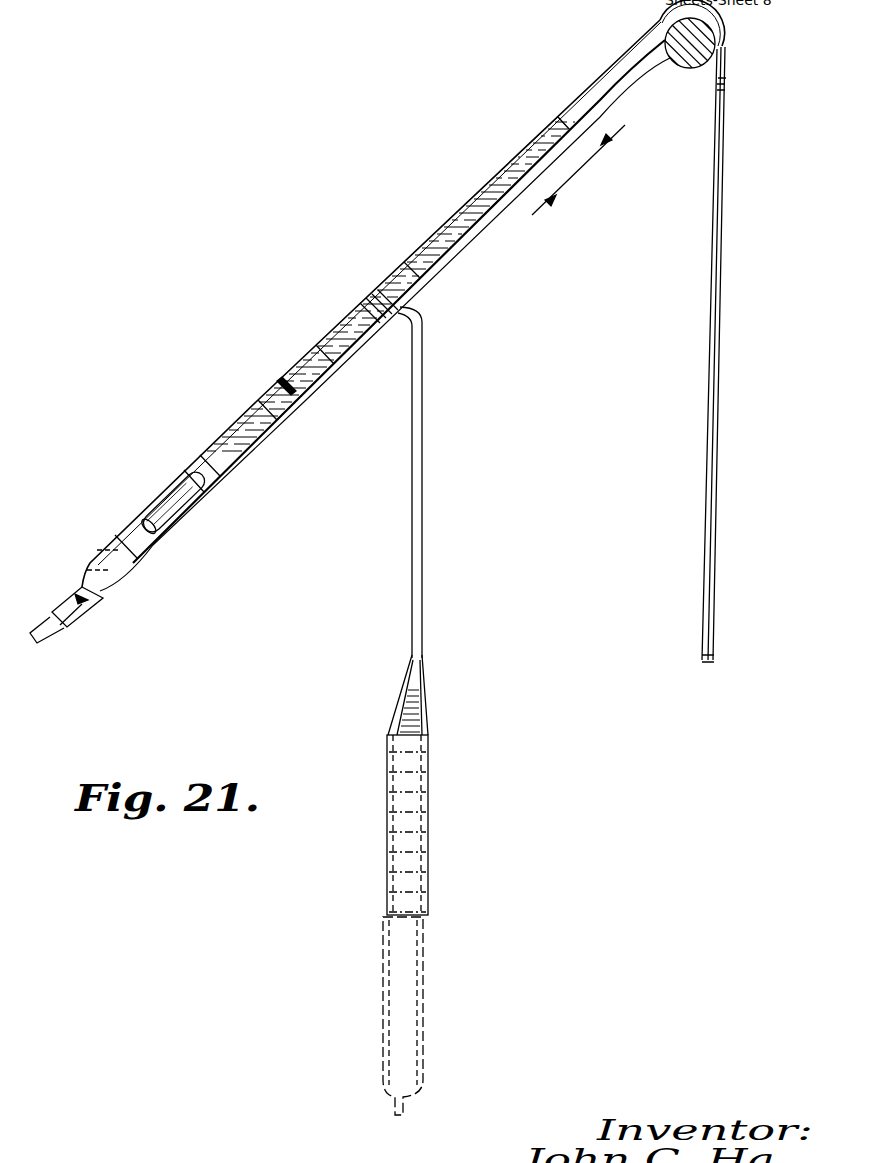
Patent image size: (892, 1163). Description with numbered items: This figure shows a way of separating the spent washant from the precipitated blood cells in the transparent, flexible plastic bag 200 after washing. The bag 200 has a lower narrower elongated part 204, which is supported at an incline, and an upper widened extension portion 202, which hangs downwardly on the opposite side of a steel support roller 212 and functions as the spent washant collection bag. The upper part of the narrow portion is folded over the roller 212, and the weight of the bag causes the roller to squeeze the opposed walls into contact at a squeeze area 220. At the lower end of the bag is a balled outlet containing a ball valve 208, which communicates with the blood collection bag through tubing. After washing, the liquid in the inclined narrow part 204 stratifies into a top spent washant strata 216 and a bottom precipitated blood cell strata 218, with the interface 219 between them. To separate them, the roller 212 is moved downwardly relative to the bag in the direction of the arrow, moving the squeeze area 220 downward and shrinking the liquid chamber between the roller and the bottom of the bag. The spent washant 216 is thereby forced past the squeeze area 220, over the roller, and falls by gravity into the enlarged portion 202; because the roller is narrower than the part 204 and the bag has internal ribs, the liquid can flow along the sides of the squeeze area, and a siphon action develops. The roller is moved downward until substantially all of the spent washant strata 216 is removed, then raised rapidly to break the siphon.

The transparent flexible plastic bag 200 is at (463, 254).
The widened extension portion 202 is at (722, 358).
The lower narrower elongated part 204 is at (357, 293).
The ball valve 208 is at (80, 583).
The steel support roller 212 is at (672, 70).
The spent washant strata 216 is at (477, 199).
The precipitated blood cell strata 218 is at (140, 544).
The interface 219 is at (290, 382).
The squeeze area 220 is at (714, 19).